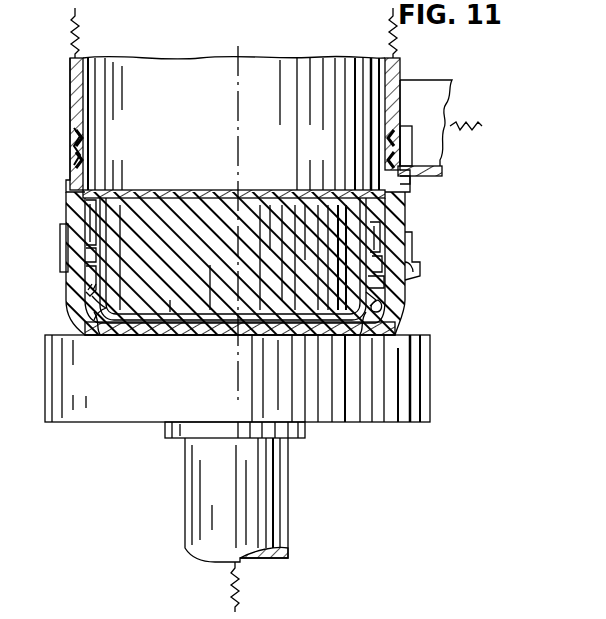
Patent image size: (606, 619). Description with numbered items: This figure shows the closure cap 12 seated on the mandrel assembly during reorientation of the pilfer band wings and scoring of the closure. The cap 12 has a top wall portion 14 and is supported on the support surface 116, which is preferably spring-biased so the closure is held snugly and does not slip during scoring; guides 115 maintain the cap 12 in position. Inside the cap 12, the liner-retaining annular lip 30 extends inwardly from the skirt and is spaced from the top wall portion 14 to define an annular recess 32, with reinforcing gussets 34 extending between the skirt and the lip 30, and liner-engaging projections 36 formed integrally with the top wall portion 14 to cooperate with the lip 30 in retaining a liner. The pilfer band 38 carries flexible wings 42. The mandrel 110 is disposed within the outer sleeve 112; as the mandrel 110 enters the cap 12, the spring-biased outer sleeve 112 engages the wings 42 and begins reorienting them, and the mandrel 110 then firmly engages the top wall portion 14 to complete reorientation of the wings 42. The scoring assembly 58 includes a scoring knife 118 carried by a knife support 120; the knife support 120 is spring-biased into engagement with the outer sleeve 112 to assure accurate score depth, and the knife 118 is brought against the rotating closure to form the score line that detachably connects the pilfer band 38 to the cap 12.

The closure cap 12 is at (66, 294).
The top wall portion 14 is at (264, 336).
The liner-retaining annular lip 30 is at (108, 296).
The annular recess 32 is at (380, 306).
The reinforcing gussets 34 is at (378, 300).
The liner-engaging projections 36 is at (94, 314).
The pilfer band 38 is at (60, 124).
The wings 42 is at (80, 142).
The scoring assembly 58 is at (442, 80).
The mandrel 110 is at (249, 247).
The outer sleeve 112 is at (73, 60).
The guides 115 is at (60, 238).
The support surface 116 is at (398, 346).
The scoring knife 118 is at (434, 178).
The knife support 120 is at (447, 98).